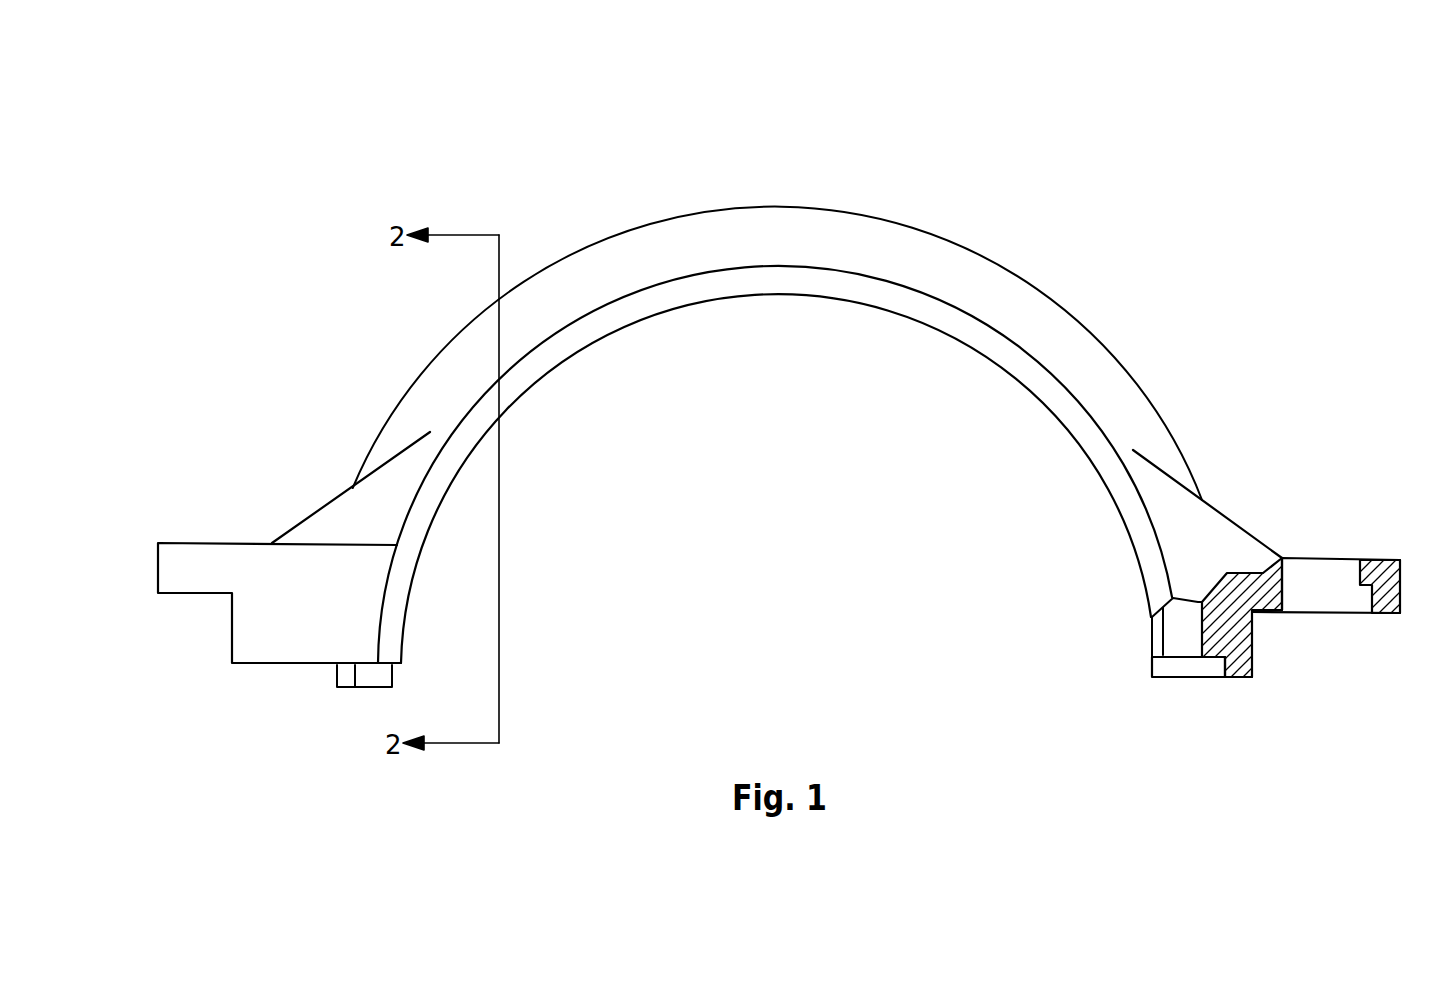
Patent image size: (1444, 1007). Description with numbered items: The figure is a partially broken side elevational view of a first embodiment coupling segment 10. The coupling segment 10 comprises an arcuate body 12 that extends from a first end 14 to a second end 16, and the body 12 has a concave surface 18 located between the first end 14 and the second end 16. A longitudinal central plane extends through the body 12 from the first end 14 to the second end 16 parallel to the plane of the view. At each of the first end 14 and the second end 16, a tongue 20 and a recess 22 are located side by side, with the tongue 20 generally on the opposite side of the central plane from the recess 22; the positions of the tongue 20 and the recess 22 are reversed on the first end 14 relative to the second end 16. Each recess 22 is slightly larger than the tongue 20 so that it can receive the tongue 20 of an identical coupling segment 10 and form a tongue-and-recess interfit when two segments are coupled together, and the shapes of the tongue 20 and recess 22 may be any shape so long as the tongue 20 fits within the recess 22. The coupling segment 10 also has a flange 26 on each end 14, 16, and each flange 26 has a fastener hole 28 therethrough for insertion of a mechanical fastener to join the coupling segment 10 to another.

The coupling segment 10 is at (857, 206).
The arcuate body 12 is at (643, 312).
The first end 14 is at (232, 663).
The second end 16 is at (1253, 677).
The concave surface 18 is at (1083, 452).
The tongue 20 is at (385, 675).
The recess 22 is at (1150, 667).
The flange 26 is at (157, 543).
The fastener hole 28 is at (1340, 567).